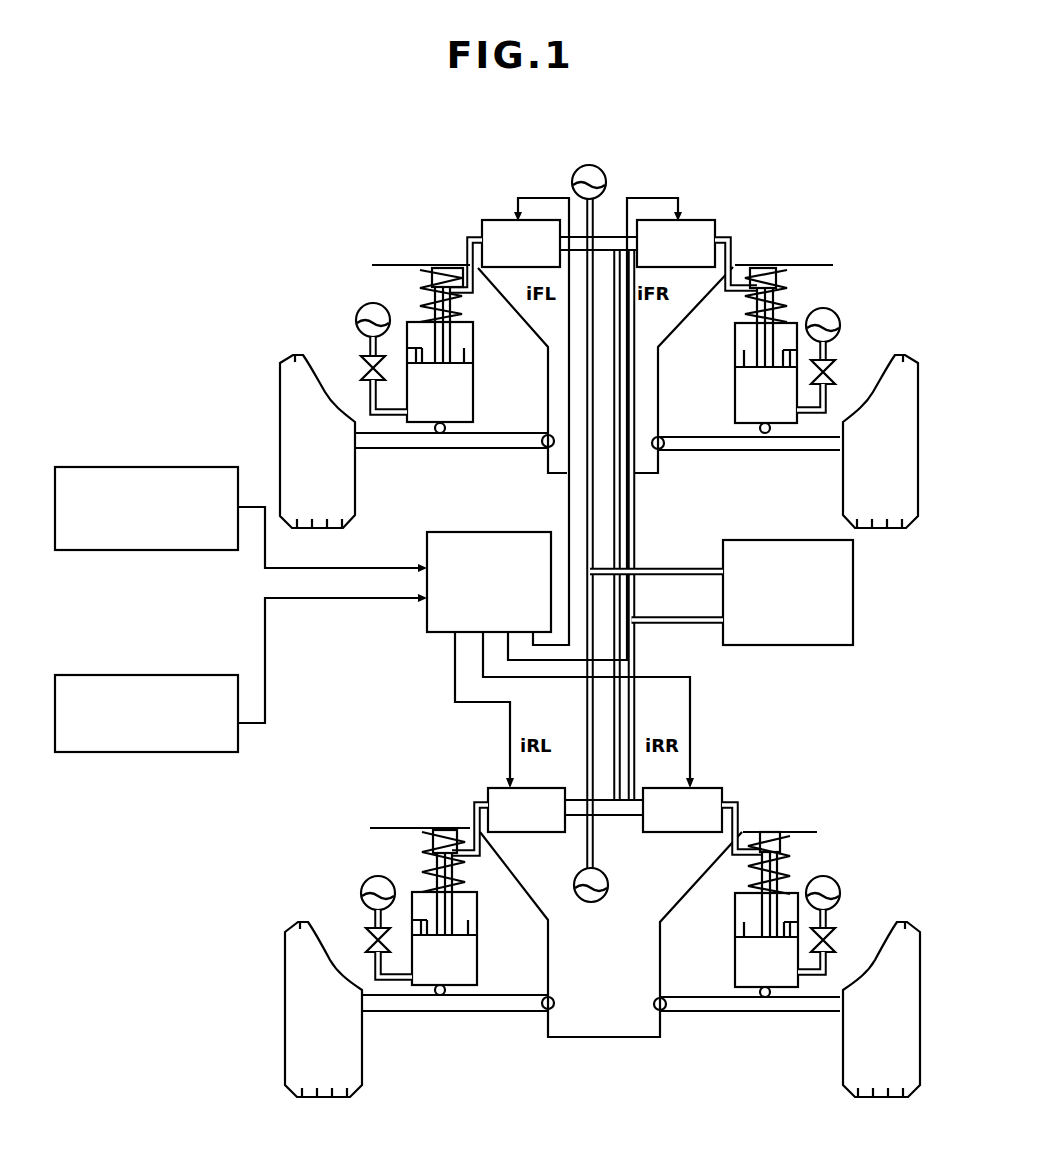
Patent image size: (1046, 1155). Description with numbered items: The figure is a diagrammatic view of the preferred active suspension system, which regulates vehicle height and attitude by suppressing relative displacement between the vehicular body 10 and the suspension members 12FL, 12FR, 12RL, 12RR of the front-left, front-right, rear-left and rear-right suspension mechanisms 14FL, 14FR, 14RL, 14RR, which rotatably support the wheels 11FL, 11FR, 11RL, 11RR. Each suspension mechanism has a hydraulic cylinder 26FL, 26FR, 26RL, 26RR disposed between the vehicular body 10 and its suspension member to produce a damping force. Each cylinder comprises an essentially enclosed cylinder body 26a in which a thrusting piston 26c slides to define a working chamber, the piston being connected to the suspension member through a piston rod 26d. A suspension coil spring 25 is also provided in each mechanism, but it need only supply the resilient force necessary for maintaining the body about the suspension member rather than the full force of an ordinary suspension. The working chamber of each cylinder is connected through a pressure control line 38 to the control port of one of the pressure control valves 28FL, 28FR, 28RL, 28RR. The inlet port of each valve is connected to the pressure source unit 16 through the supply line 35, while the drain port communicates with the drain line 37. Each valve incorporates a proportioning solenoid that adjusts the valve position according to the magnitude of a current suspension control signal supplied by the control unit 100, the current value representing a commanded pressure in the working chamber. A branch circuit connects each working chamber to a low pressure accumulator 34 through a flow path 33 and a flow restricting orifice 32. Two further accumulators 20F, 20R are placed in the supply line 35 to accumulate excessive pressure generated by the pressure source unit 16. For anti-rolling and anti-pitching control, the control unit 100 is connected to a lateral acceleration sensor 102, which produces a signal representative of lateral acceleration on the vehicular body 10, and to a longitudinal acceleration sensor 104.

The vehicular body 10 is at (655, 474).
The front-left wheel 11FL is at (280, 400).
The front-right wheel 11FR is at (843, 507).
The rear-left wheel 11RL is at (293, 1045).
The rear-right wheel 11RR is at (847, 1067).
The front-left suspension member 12FL is at (413, 452).
The front-right suspension member 12FR is at (734, 453).
The rear-left suspension member 12RL is at (480, 1013).
The rear-right suspension member 12RR is at (720, 1017).
The front-left suspension mechanism 14FL is at (416, 322).
The front-right suspension mechanism 14FR is at (790, 323).
The rear-left suspension mechanism 14RL is at (420, 896).
The rear-right suspension mechanism 14RR is at (782, 894).
The pressure source unit 16 is at (855, 593).
The front pressure accumulator 20F is at (590, 164).
The rear pressure accumulator 20R is at (609, 880).
The suspension coil spring 25 is at (426, 297).
The front-left hydraulic cylinder 26FL is at (500, 383).
The front-right hydraulic cylinder 26FR is at (730, 388).
The rear-left hydraulic cylinder 26RL is at (503, 955).
The rear-right hydraulic cylinder 26RR is at (730, 955).
The cylinder body 26a is at (474, 412).
The thrusting piston 26c is at (465, 353).
The piston rod 26d is at (457, 418).
The front-left pressure control valve 28FL is at (486, 218).
The front-right pressure control valve 28FR is at (703, 218).
The rear-left pressure control valve 28RL is at (488, 787).
The rear-right pressure control valve 28RR is at (712, 787).
The orifice 32 is at (358, 372).
The flow path 33 is at (390, 413).
The pressure accumulator 34 is at (355, 310).
The supply line 35 is at (673, 566).
The drain line 37 is at (673, 615).
The pressure control line 38 is at (468, 242).
The control unit 100 is at (492, 532).
The lateral acceleration sensor 102 is at (172, 467).
The longitudinal acceleration sensor 104 is at (157, 675).